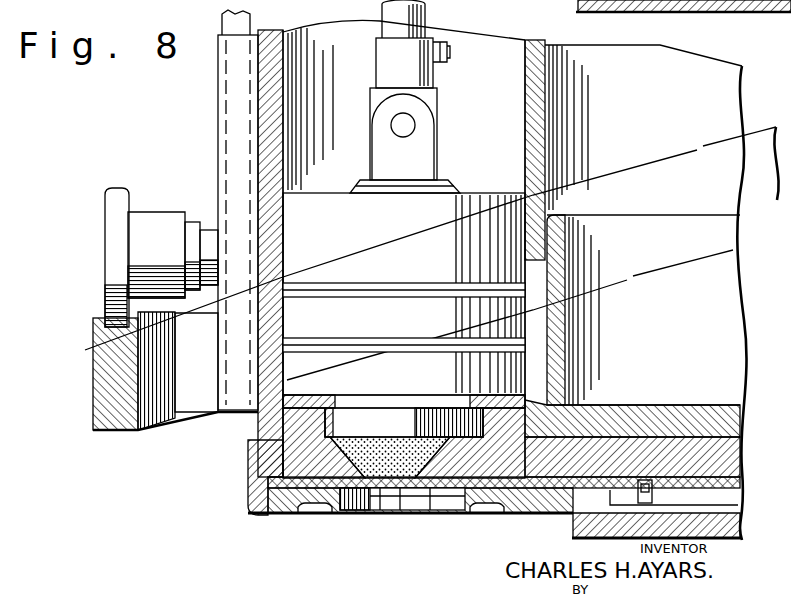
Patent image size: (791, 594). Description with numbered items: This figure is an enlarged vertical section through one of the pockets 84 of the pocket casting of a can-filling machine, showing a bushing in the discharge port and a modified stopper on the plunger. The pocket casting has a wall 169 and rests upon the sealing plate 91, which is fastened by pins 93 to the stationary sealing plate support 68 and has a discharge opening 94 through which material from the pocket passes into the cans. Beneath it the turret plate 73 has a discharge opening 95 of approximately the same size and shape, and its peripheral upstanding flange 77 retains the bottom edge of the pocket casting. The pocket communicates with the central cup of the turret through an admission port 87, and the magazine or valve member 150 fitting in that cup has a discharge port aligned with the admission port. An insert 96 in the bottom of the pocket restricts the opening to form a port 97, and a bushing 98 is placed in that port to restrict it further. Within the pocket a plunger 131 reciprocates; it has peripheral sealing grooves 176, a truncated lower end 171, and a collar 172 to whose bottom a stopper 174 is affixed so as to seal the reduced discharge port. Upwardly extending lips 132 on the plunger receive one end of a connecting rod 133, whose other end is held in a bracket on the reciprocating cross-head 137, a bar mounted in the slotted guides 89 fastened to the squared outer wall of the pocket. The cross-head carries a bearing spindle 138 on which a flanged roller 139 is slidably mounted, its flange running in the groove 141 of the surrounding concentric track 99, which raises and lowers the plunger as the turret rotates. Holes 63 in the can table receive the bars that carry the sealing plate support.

The holes 63 is at (736, 452).
The sealing plate support 68 is at (736, 488).
The turret plate 73 is at (752, 524).
The peripheral upstanding flange 77 is at (250, 453).
The pockets 84 is at (500, 248).
The admission port 87 is at (566, 356).
The slotted guides 89 is at (230, 68).
The sealing plate 91 is at (508, 530).
The pins 93 is at (645, 4).
The discharge opening 94 is at (389, 488).
The discharge opening 95 is at (397, 500).
The inserts 96 is at (264, 478).
The port 97 is at (396, 480).
The bushing 98 is at (381, 486).
The track 99 is at (103, 432).
The plunger 131 is at (404, 294).
The lips 132 is at (405, 140).
The connecting rod 133 is at (426, 20).
The cross-head 137 is at (231, 17).
The bearing spindle 138 is at (199, 226).
The flanged roller 139 is at (147, 213).
The groove 141 is at (97, 336).
The magazine or valve member 150 is at (566, 258).
The wall 169 is at (546, 83).
The truncated lower end 171 is at (382, 400).
The collar 172 is at (404, 422).
The stopper 174 is at (410, 437).
The peripheral sealing grooves 176 is at (386, 292).